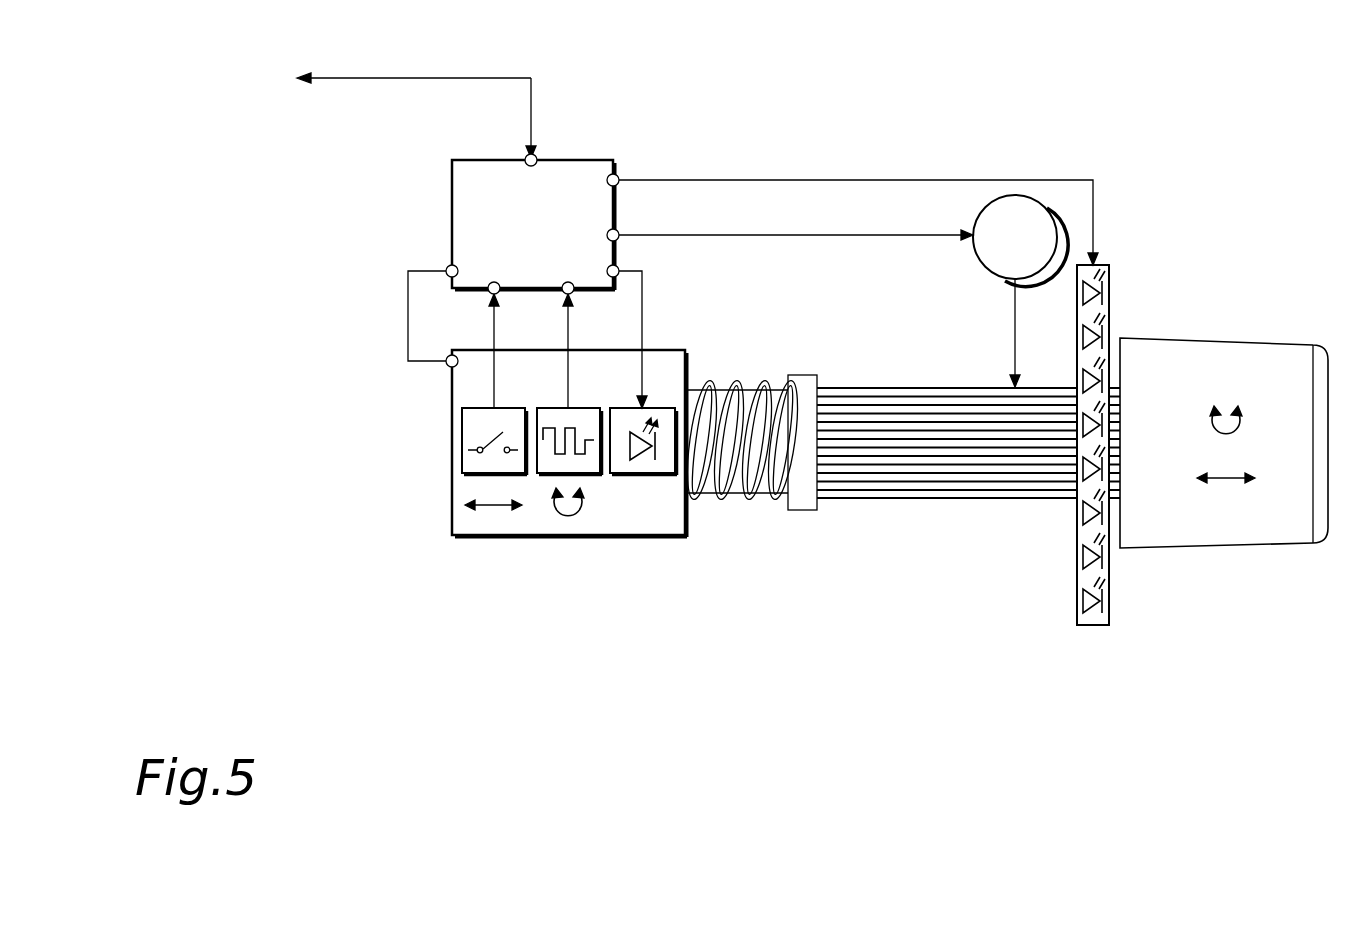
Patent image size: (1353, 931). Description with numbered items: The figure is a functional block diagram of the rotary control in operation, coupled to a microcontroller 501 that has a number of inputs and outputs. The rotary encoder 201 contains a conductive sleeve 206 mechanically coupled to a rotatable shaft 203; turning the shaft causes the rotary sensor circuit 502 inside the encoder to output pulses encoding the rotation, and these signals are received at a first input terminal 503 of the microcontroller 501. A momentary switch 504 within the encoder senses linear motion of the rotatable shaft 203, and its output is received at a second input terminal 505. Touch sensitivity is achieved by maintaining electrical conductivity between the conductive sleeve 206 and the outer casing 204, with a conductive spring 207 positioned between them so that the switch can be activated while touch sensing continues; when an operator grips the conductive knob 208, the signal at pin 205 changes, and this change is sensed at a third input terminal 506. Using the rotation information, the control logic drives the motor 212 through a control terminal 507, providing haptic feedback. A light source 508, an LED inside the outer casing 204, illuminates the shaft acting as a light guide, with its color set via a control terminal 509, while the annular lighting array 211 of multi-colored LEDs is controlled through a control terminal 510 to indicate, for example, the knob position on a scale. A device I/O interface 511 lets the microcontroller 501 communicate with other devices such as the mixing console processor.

The rotary encoder 201 is at (723, 335).
The rotatable shaft 203 is at (740, 392).
The outer casing 204 is at (448, 522).
The pin 205 is at (449, 366).
The conductive sleeve 206 is at (935, 393).
The conductive spring 207 is at (750, 500).
The conductive knob 208 is at (1270, 348).
The annular lighting array 211 is at (1110, 268).
The motor 212 is at (980, 222).
The microcontroller 501 is at (580, 160).
The rotary sensor circuit 502 is at (585, 467).
The first input terminal 503 is at (565, 296).
The momentary switch 504 is at (510, 467).
The second input terminal 505 is at (490, 296).
The third input terminal 506 is at (446, 268).
The control terminal 507 is at (620, 233).
The light source 508 is at (658, 467).
The control terminal 509 is at (620, 271).
The control terminal 510 is at (620, 177).
The device I/O interface 511 is at (525, 158).